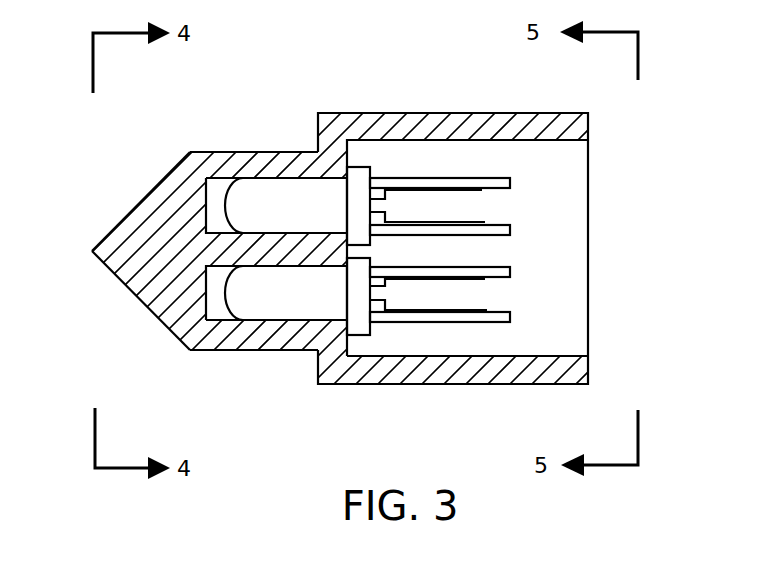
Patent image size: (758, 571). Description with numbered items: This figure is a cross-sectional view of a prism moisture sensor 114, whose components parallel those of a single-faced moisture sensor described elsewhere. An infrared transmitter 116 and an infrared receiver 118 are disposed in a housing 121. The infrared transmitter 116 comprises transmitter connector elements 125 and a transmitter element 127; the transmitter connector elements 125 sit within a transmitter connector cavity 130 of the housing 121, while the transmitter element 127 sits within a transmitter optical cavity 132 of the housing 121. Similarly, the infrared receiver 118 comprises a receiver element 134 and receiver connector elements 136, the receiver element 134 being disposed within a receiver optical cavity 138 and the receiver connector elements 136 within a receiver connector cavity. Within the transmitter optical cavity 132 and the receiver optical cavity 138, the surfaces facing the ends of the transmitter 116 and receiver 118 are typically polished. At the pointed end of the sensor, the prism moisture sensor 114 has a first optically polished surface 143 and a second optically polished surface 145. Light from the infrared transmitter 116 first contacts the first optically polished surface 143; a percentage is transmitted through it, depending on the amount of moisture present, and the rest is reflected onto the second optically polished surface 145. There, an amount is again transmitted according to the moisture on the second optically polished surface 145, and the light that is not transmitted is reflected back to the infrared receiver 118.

The prism moisture sensor 114 is at (378, 98).
The infrared transmitter 116 is at (279, 324).
The infrared receiver 118 is at (278, 175).
The housing 121 is at (410, 385).
The transmitter connector elements 125 is at (485, 279).
The transmitter element 127 is at (236, 321).
The transmitter connector cavity 130 is at (557, 356).
The transmitter optical cavity 132 is at (207, 311).
The receiver element 134 is at (210, 213).
The receiver connector elements 136 is at (482, 190).
The receiver optical cavity 138 is at (206, 197).
The first optically polished surface 143 is at (130, 296).
The second optically polished surface 145 is at (115, 225).